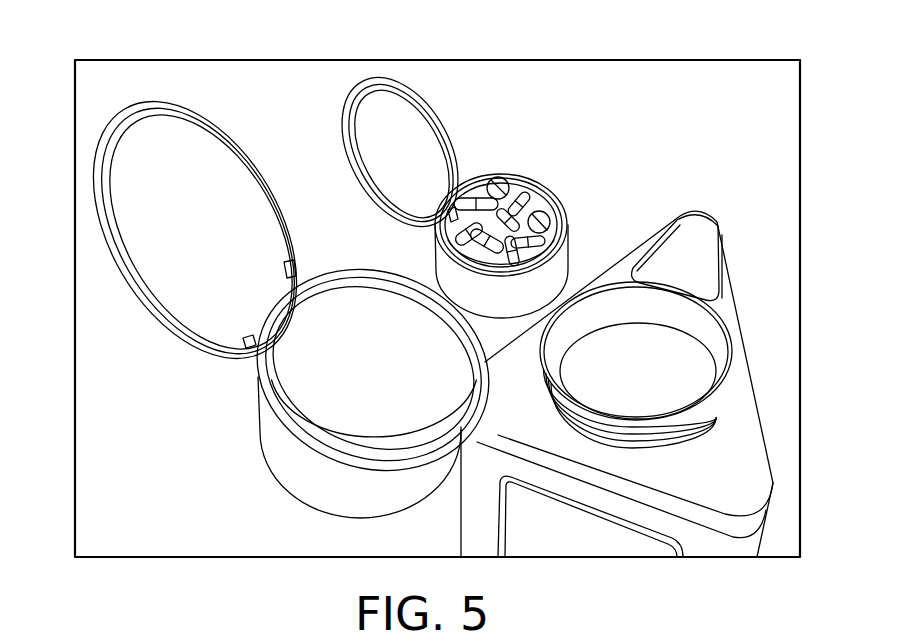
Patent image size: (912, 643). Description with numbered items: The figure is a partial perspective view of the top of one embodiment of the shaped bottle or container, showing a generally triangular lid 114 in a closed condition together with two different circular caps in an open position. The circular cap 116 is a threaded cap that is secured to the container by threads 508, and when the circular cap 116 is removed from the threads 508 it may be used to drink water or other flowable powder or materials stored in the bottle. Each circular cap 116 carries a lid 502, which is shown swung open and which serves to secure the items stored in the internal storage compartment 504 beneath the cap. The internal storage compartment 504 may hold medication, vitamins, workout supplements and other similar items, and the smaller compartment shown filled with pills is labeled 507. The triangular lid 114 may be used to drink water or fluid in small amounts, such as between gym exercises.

The triangular lid 114 is at (697, 247).
The circular cap 116 is at (568, 236).
The lid 502 is at (180, 280).
The internal storage compartment 504 is at (348, 389).
The small container with pills 507 is at (505, 215).
The threads 508 is at (723, 417).